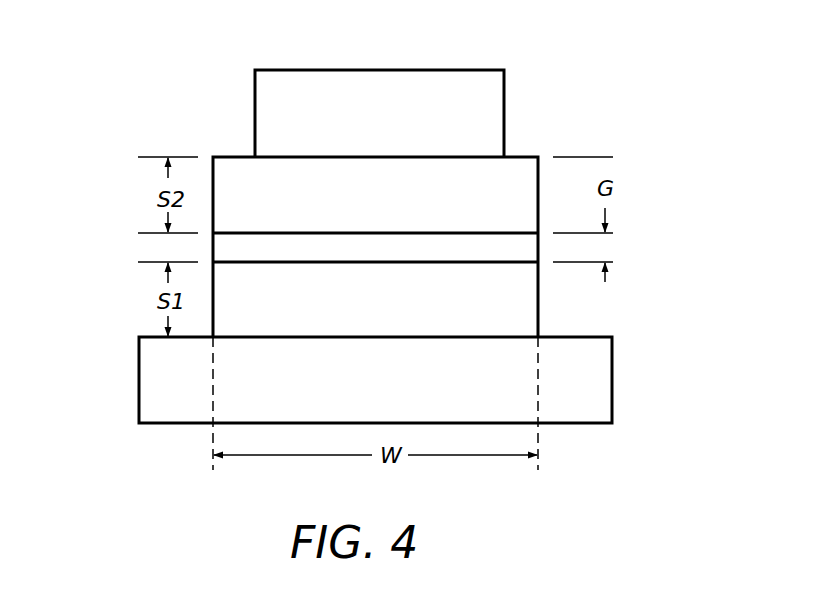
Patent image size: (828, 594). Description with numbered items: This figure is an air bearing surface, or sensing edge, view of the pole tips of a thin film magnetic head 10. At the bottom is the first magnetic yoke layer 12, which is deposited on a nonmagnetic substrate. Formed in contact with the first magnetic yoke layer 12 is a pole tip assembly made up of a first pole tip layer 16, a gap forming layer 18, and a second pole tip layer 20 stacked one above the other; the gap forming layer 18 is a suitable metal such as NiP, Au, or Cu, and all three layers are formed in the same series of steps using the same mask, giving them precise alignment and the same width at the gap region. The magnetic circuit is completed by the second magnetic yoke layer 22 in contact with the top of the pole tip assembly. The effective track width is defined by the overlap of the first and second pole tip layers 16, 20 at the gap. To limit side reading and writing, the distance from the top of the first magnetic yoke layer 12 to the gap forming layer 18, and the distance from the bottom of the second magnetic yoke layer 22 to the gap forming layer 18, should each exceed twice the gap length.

The thin film magnetic head 10 is at (142, 430).
The first magnetic yoke layer 12 is at (601, 380).
The first pole tip layer 16 is at (522, 290).
The gap forming layer 18 is at (525, 243).
The second pole tip layer 20 is at (522, 165).
The second magnetic yoke layer 22 is at (268, 108).